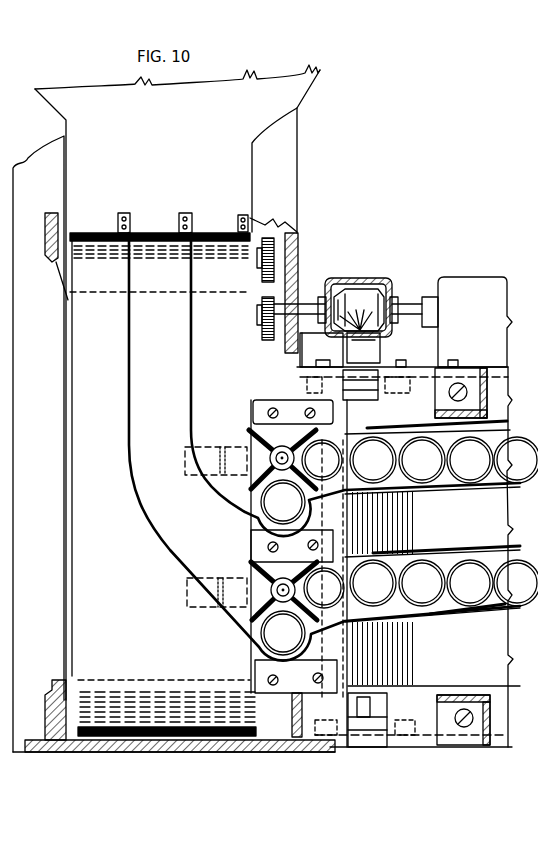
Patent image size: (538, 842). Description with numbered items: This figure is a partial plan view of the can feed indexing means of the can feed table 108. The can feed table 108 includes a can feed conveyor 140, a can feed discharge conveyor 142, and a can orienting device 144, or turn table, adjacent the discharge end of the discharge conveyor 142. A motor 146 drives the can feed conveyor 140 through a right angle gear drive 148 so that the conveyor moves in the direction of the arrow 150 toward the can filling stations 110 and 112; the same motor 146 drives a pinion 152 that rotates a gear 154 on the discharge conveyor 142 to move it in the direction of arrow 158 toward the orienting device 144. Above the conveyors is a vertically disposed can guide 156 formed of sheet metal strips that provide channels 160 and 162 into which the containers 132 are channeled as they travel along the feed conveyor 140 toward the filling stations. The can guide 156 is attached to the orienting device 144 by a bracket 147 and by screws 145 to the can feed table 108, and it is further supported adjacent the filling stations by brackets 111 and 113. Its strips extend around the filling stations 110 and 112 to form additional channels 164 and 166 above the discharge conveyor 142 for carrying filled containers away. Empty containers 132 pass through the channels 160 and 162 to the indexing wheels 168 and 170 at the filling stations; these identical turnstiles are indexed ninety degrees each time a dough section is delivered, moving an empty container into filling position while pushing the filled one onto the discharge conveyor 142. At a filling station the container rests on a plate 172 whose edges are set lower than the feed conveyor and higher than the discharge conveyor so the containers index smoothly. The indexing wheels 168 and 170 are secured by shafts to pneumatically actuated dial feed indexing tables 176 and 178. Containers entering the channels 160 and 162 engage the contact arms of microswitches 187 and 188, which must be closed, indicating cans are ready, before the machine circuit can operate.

The can feed table 108 is at (412, 752).
The can filling station 110 is at (296, 510).
The bracket 111 is at (295, 398).
The can filling station 112 is at (296, 641).
The bracket 113 is at (260, 667).
The containers 132 is at (384, 474).
The can feed conveyor 140 is at (466, 663).
The can feed discharge conveyor 142 is at (162, 658).
The can orienting device 144 is at (176, 122).
The screws 145 is at (191, 222).
The motor 146 is at (478, 288).
The bracket 147 is at (130, 220).
The right angle gear drive 148 is at (376, 282).
The arrow 150 is at (478, 526).
The pinion 152 is at (262, 330).
The gear 154 is at (262, 290).
The can guide 156 is at (165, 551).
The arrow 158 is at (157, 353).
The channel 160 is at (447, 470).
The channel 162 is at (498, 565).
The channel 164 is at (173, 333).
The channel 166 is at (240, 391).
The indexing wheel 168 is at (300, 411).
The indexing wheel 170 is at (247, 617).
The plate 172 is at (313, 744).
The dial feed indexing table 176 is at (238, 447).
The dial feed indexing table 178 is at (187, 593).
The microswitch 187 is at (503, 420).
The microswitch 188 is at (498, 614).